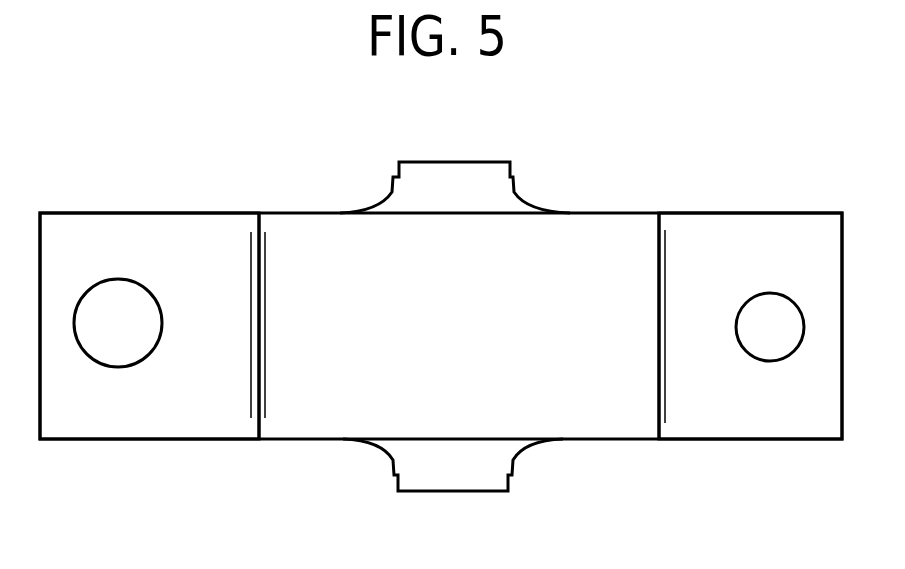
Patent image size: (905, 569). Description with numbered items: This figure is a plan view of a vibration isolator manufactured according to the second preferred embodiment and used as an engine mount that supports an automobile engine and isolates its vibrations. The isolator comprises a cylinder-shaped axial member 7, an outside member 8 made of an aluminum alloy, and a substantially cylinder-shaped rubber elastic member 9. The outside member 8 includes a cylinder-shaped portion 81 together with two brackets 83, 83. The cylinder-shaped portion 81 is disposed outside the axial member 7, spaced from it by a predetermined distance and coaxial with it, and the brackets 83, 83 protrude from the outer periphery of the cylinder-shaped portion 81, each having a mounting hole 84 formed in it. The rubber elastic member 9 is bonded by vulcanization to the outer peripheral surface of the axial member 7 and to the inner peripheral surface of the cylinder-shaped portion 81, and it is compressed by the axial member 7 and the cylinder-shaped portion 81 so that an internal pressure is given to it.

The axial member 7 is at (419, 168).
The outside member 8 is at (619, 213).
The rubber elastic member 9 is at (468, 192).
The cylinder-shaped portion 81 is at (317, 255).
The bracket 83 is at (150, 234).
The mounting hole 84 is at (110, 356).